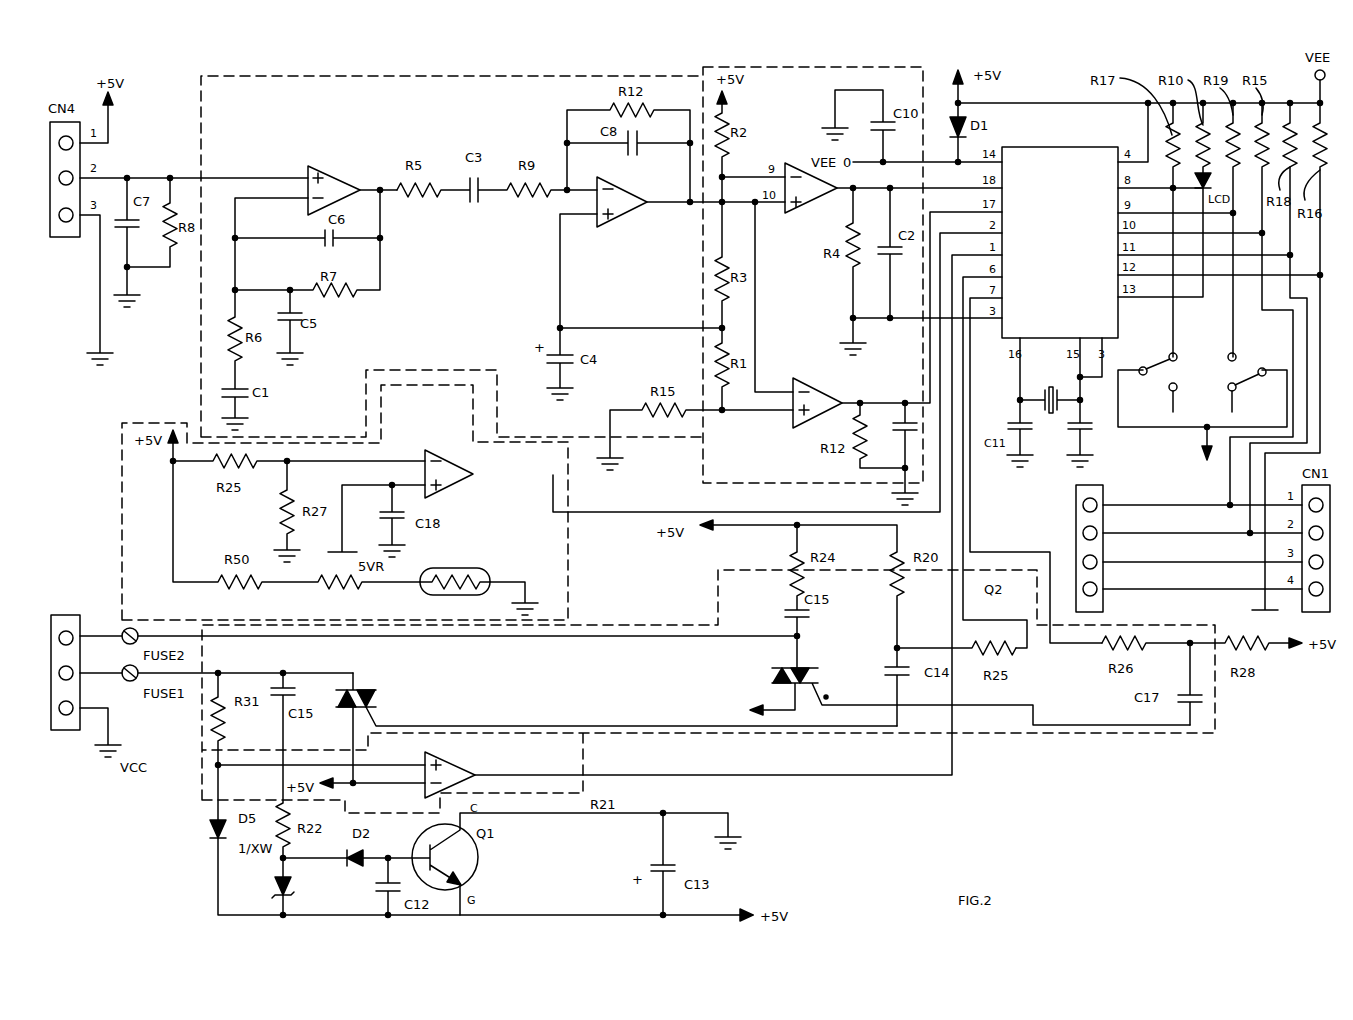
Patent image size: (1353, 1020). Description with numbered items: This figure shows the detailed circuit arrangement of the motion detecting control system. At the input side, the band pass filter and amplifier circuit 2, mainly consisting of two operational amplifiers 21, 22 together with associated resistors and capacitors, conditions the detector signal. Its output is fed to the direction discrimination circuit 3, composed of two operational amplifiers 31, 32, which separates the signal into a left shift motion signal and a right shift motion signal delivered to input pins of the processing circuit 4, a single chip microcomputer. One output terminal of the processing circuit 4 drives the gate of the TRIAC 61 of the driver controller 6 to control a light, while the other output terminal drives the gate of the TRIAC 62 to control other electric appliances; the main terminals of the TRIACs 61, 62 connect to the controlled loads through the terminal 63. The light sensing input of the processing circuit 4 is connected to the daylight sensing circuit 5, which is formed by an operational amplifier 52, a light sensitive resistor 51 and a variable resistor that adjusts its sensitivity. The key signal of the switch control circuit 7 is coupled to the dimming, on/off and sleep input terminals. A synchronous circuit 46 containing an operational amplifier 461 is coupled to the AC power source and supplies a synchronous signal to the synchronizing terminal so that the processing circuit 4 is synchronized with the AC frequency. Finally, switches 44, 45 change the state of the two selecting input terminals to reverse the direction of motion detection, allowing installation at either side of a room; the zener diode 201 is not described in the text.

The band pass filter and amplifier circuit 2 is at (201, 110).
The direction discrimination circuit 3 is at (705, 105).
The processing circuit 4 is at (1050, 147).
The daylight sensing circuit 5 is at (570, 597).
The driver controller 6 is at (1100, 736).
The switch control circuit 7 is at (1076, 521).
The operational amplifier 21 is at (313, 165).
The operational amplifier 22 is at (628, 220).
The operational amplifier 31 is at (808, 172).
The operational amplifier 32 is at (798, 390).
The switch 44 is at (1155, 388).
The switch 45 is at (1227, 372).
The synchronous circuit 46 is at (1192, 182).
The light sensitive resistor 51 is at (487, 572).
The operational amplifier 52 is at (446, 458).
The TRIAC 61 is at (822, 682).
The TRIAC 62 is at (378, 702).
The terminal 63 is at (66, 613).
The zener diode 201 is at (303, 896).
The operational amplifier 461 is at (440, 758).